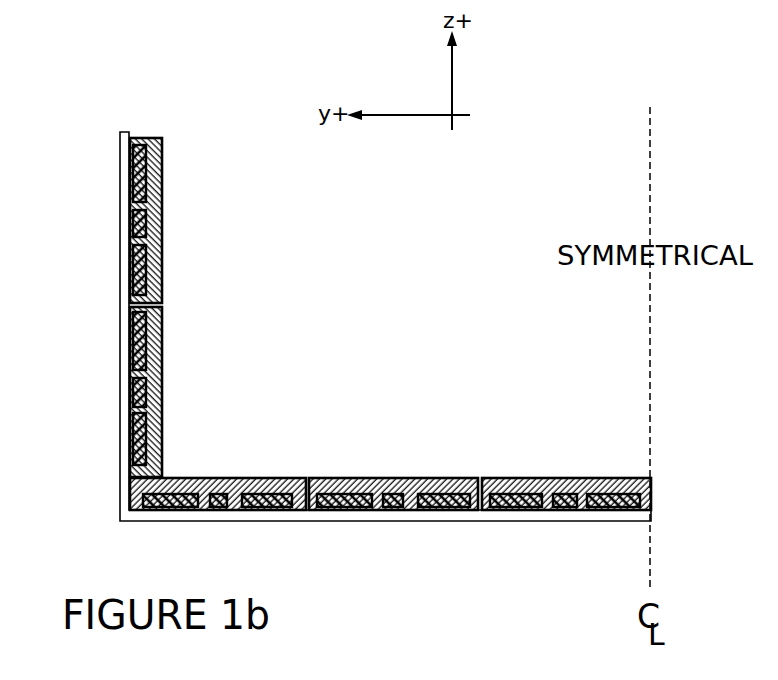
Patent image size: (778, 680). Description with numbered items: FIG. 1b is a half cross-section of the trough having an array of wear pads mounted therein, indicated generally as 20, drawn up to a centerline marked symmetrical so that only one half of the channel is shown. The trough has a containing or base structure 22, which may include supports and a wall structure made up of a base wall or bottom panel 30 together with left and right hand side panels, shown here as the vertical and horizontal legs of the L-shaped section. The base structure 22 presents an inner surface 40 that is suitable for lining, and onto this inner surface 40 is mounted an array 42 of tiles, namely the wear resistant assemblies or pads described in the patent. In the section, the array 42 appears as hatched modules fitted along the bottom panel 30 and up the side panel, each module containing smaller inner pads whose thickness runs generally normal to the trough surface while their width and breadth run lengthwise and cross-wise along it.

The trough having an array of wear pads 20 is at (416, 246).
The structure 22 is at (459, 510).
The bottom panel 30 is at (407, 510).
The inner surface 40 is at (337, 510).
The array 42 is at (162, 207).